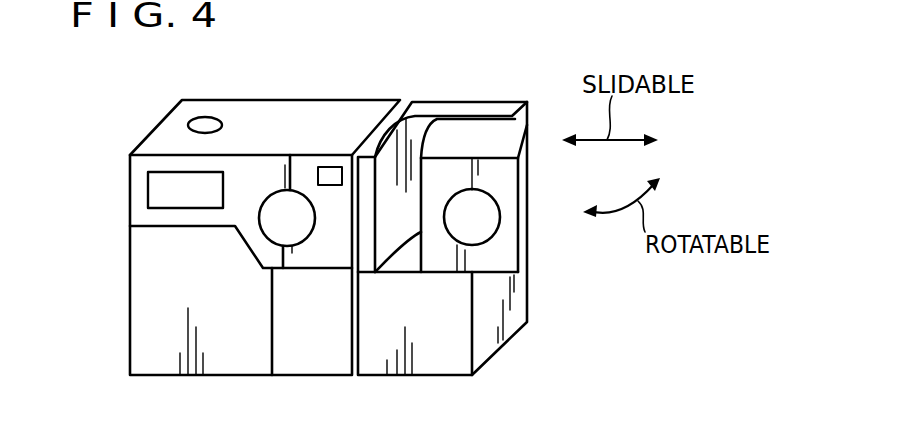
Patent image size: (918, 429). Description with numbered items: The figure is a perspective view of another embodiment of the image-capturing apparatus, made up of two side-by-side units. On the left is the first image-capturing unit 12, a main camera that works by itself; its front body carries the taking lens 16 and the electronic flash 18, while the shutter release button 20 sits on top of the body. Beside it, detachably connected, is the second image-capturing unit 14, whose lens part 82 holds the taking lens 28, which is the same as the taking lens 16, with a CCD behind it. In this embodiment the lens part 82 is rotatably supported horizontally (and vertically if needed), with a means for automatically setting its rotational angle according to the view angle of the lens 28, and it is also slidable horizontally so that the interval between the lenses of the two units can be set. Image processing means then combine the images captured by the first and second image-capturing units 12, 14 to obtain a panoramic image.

The first image-capturing unit 12 is at (160, 286).
The second image-capturing unit 14 is at (496, 347).
The taking lens 16 is at (272, 226).
The electronic flash 18 is at (163, 190).
The shutter release button 20 is at (200, 125).
The taking lens 28 is at (480, 225).
The lens part 82 is at (494, 261).